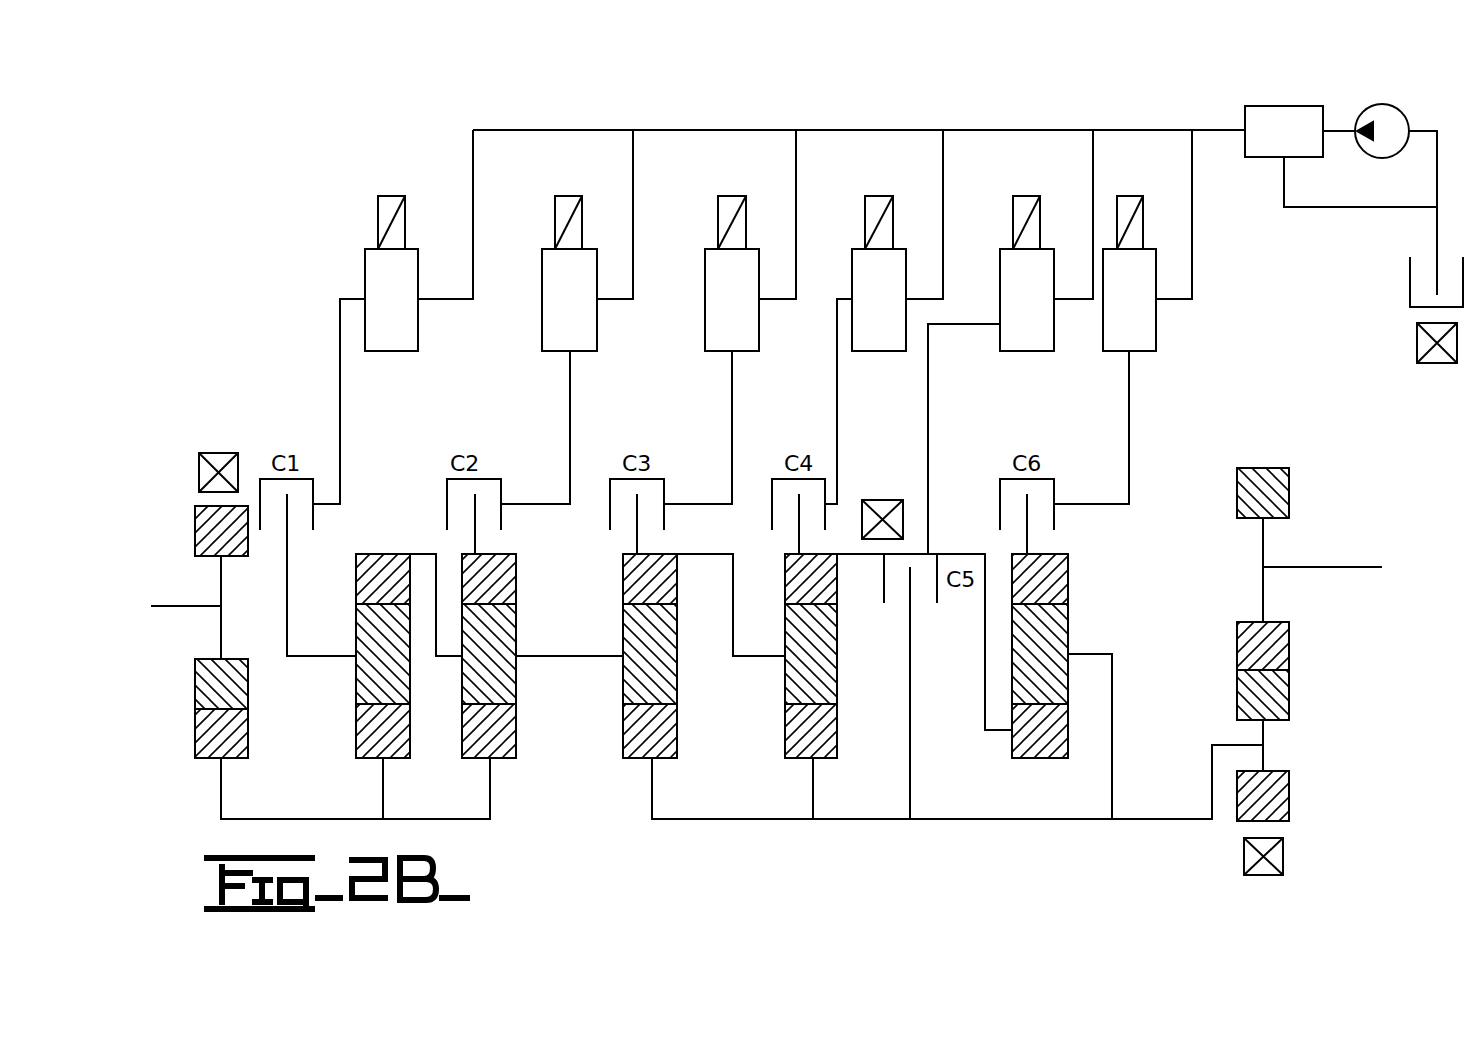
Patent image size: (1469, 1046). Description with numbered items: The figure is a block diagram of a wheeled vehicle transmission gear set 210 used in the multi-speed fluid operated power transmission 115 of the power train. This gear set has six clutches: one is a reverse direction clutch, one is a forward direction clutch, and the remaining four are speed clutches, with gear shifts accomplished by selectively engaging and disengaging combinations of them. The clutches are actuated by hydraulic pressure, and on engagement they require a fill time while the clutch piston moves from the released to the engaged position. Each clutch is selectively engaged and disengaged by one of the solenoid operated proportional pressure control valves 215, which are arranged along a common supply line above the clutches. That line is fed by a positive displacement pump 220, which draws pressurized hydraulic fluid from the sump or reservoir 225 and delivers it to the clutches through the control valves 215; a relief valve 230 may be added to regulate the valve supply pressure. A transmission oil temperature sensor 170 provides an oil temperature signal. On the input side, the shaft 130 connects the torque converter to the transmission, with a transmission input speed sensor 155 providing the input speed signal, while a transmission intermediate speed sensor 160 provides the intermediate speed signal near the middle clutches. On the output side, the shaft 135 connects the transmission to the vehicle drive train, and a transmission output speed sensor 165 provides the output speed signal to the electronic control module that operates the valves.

The wheeled vehicle transmission gear set 210 is at (292, 134).
The multi-speed fluid operated power transmission 115 is at (391, 120).
The solenoid operated proportional pressure control valves 215 is at (365, 270).
The relief valve 230 is at (1300, 106).
The positive displacement pump 220 is at (1382, 104).
The sump or reservoir 225 is at (1410, 292).
The transmission oil temperature sensor 170 is at (1417, 345).
The transmission input speed sensor 155 is at (218, 453).
The shaft 130 is at (200, 606).
The transmission intermediate speed sensor 160 is at (880, 500).
The shaft 135 is at (1330, 567).
The transmission output speed sensor 165 is at (1265, 876).